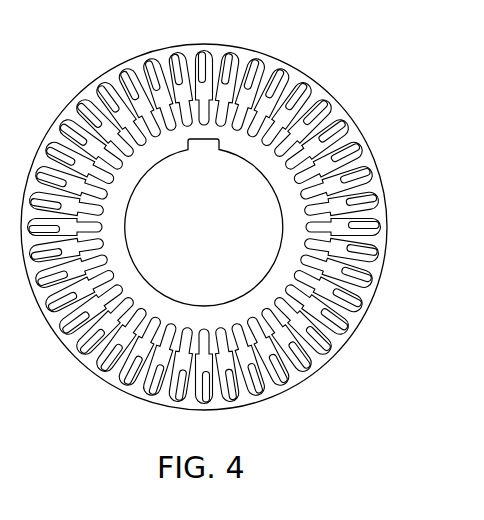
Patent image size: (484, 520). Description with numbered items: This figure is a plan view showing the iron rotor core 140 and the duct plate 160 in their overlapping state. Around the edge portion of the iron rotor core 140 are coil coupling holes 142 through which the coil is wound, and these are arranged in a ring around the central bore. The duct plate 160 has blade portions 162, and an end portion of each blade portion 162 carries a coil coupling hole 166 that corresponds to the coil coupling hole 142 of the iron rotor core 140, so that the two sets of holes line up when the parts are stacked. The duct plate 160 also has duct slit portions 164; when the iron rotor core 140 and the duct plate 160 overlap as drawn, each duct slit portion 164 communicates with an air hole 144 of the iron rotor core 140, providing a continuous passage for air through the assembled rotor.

The iron rotor core 140 is at (280, 58).
The coil coupling hole 142 is at (318, 82).
The coil coupling hole 166 is at (318, 82).
The air hole 144 is at (352, 132).
The duct plate 160 is at (82, 100).
The blade portion 162 is at (108, 87).
The duct slit portion 164 is at (65, 120).